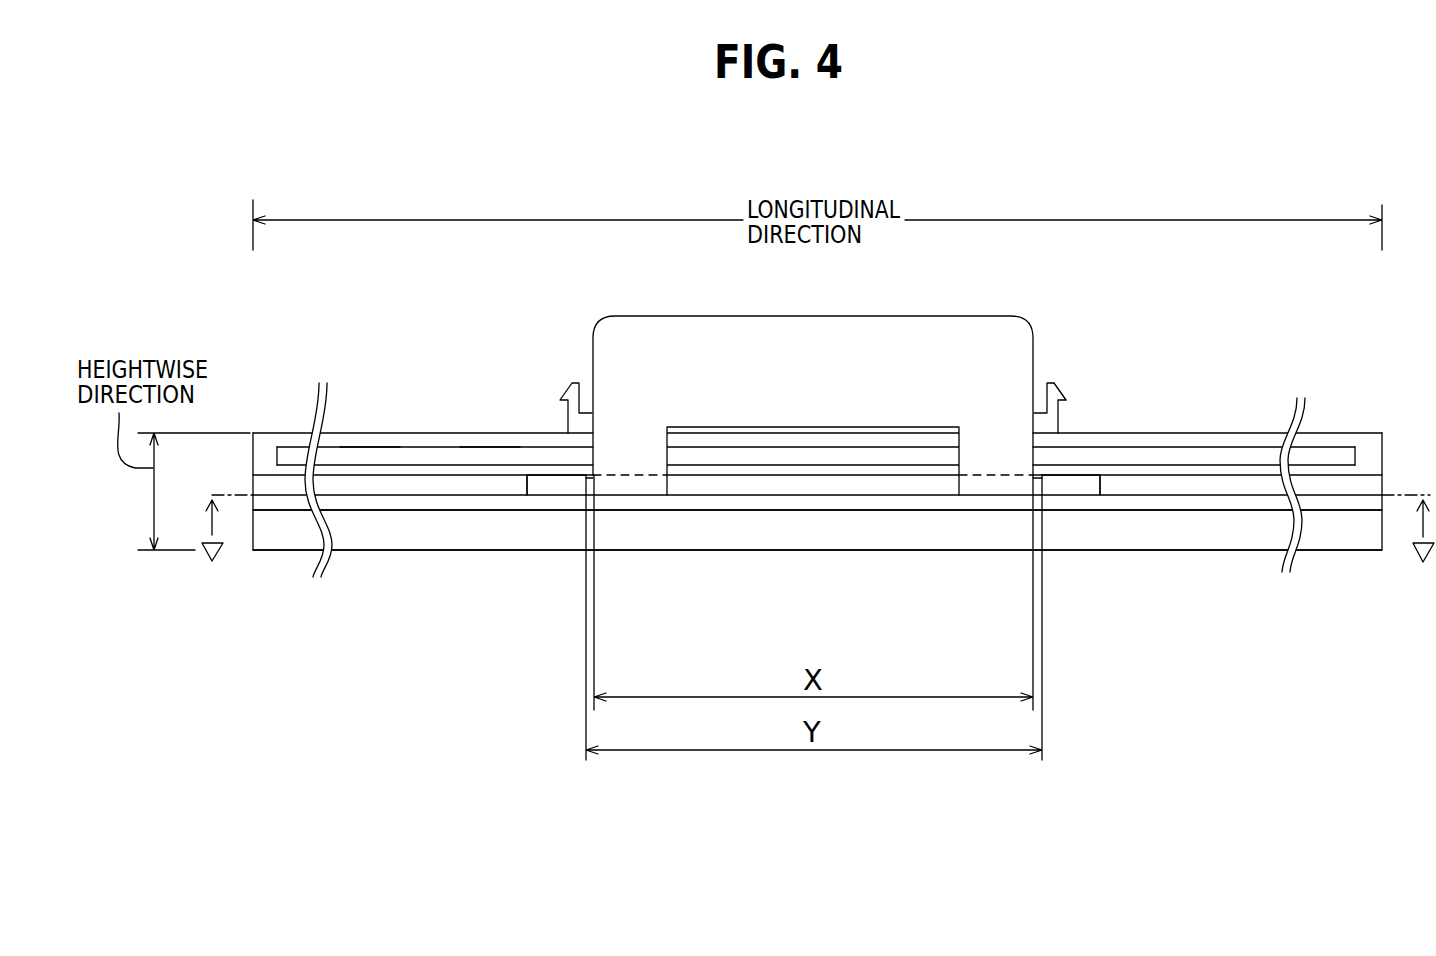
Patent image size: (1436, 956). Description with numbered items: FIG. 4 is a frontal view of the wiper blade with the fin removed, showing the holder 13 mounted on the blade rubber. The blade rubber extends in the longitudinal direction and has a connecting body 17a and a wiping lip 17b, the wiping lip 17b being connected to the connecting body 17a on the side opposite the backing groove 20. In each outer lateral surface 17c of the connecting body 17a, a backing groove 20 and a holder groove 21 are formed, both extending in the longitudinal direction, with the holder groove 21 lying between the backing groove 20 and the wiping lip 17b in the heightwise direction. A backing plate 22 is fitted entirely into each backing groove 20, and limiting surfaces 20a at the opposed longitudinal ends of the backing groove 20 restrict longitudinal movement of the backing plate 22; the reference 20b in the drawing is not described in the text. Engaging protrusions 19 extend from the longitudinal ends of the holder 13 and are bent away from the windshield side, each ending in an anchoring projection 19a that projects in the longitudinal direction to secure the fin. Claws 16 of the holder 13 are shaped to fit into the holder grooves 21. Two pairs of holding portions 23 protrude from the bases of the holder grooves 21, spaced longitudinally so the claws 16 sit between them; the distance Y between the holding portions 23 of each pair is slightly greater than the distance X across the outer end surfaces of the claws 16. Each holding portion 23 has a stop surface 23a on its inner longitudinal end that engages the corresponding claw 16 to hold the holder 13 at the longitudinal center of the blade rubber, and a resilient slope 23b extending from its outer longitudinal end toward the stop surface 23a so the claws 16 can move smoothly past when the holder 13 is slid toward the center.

The holder 13 is at (917, 316).
The claw 16 is at (673, 453).
The connecting body 17a is at (1230, 433).
The wiping lip 17b is at (1347, 543).
The outer lateral surface 17c is at (1158, 440).
The engaging protrusion 19 is at (567, 392).
The anchoring projection 19a is at (1063, 402).
The backing groove 20 is at (427, 452).
The limiting surface 20a is at (289, 446).
The upper surface of plate member 20b is at (360, 455).
The holder groove 21 is at (1195, 492).
The backing plate 22 is at (485, 455).
The holding portion 23 is at (560, 485).
The stop surface 23a is at (588, 485).
The slope 23b is at (546, 483).